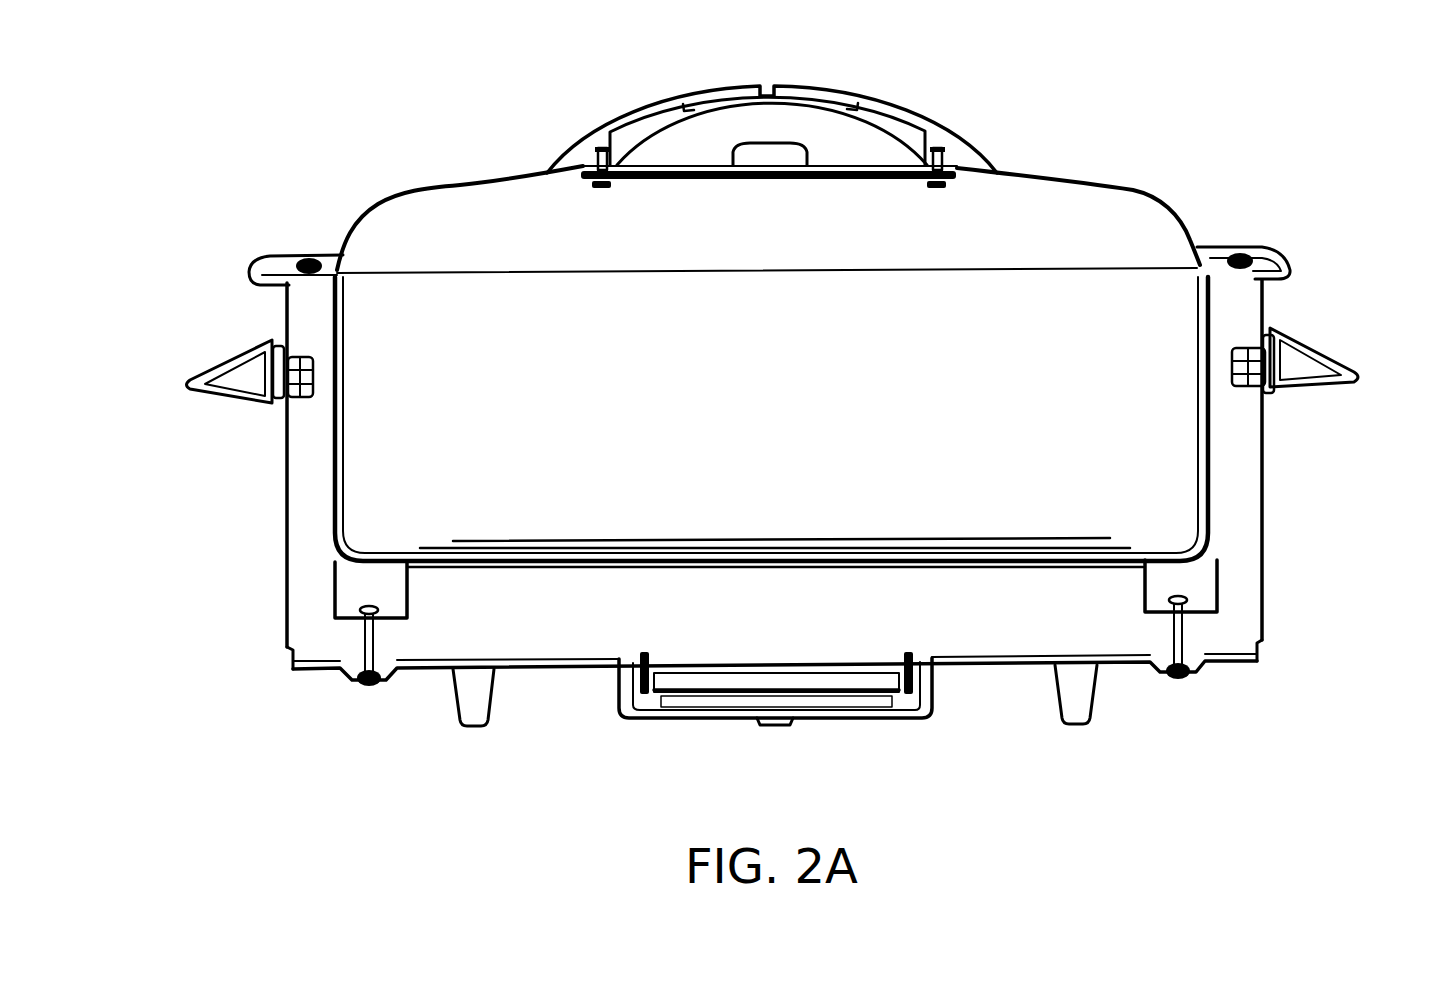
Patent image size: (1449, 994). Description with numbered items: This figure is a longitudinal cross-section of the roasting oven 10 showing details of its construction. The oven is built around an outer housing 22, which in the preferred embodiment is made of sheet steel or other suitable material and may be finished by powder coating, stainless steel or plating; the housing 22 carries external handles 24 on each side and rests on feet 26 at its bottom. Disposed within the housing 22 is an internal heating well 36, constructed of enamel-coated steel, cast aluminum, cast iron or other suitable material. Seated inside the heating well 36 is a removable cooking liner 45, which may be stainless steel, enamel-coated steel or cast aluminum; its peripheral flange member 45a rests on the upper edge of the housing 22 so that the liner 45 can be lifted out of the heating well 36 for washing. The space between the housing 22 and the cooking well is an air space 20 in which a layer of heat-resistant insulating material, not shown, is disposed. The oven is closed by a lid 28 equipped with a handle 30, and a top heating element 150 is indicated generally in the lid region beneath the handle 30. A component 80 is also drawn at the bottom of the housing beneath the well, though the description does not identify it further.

The roasting oven 10 is at (1158, 124).
The air space 20 is at (538, 608).
The outer housing 22 is at (1268, 503).
The external handle 24 is at (1315, 340).
The feet 26 is at (1093, 720).
The lid 28 is at (1176, 198).
The handle 30 is at (630, 107).
The internal heating well 36 is at (360, 562).
The removable cooking liner 45 is at (1180, 536).
The peripheral flange member 45a is at (250, 270).
The heating unit tray 80 is at (933, 712).
The top heating element 150 is at (847, 183).